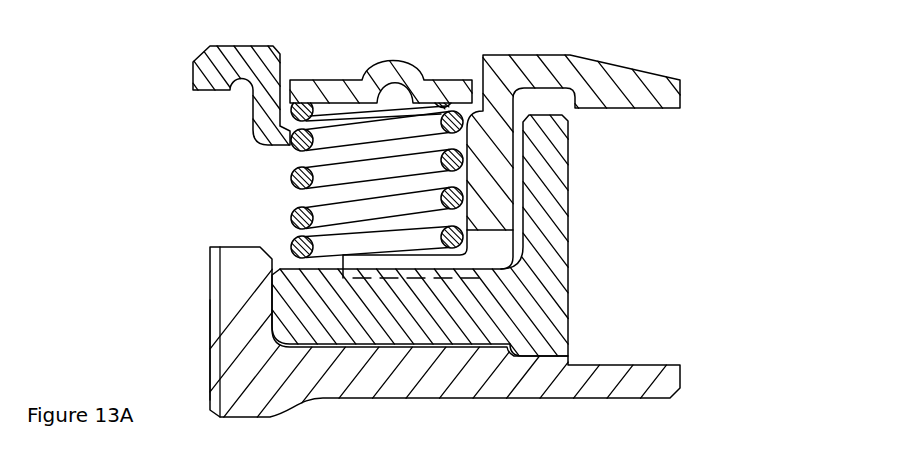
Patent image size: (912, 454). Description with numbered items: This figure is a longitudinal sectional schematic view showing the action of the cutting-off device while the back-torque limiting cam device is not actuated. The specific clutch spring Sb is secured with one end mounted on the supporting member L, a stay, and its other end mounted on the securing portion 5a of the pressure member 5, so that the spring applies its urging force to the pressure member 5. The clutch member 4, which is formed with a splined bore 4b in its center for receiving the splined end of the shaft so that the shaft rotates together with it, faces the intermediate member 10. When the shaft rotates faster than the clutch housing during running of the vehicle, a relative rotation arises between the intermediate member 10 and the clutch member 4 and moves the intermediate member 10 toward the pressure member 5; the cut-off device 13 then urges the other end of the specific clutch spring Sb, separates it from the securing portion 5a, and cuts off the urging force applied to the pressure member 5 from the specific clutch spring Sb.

The supporting member L is at (448, 86).
The pressure member 5 is at (668, 93).
The securing portion 5a is at (404, 236).
The intermediate member 10 is at (588, 301).
The clutch member 4 is at (230, 290).
The splined bore 4b is at (218, 323).
The cut-off device 13 is at (343, 253).
The specific clutch spring Sb is at (288, 180).